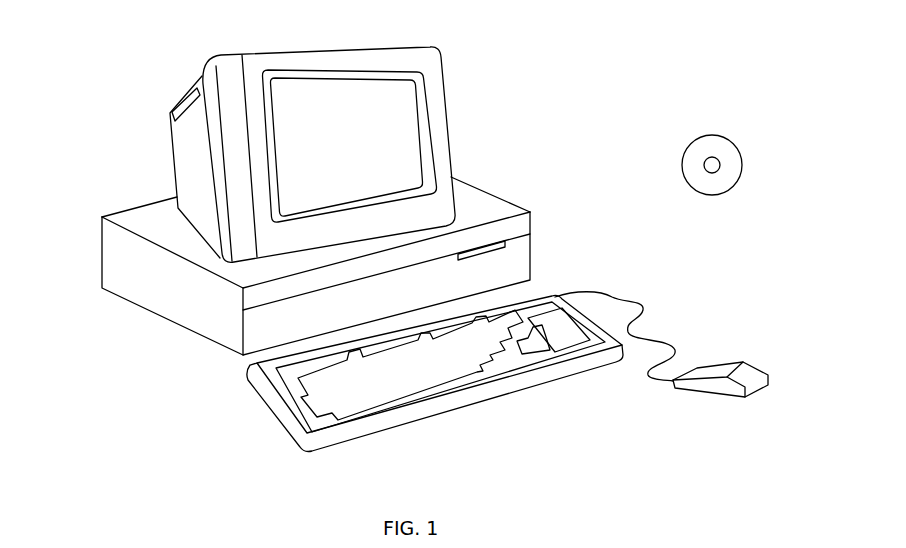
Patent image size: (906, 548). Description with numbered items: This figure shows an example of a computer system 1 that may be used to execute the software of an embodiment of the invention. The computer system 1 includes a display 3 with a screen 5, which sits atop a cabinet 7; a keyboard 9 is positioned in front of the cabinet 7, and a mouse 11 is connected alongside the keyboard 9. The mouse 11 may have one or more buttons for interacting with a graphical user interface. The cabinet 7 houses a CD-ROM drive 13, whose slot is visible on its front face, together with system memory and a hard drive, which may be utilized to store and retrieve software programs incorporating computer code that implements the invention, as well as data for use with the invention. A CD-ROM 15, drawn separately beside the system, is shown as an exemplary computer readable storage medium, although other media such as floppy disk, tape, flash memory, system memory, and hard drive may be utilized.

The computer system 1 is at (640, 23).
The display 3 is at (450, 153).
The screen 5 is at (412, 108).
The cabinet 7 is at (210, 342).
The keyboard 9 is at (440, 408).
The mouse 11 is at (758, 370).
The CD-ROM drive 13 is at (503, 243).
The CD-ROM 15 is at (725, 135).